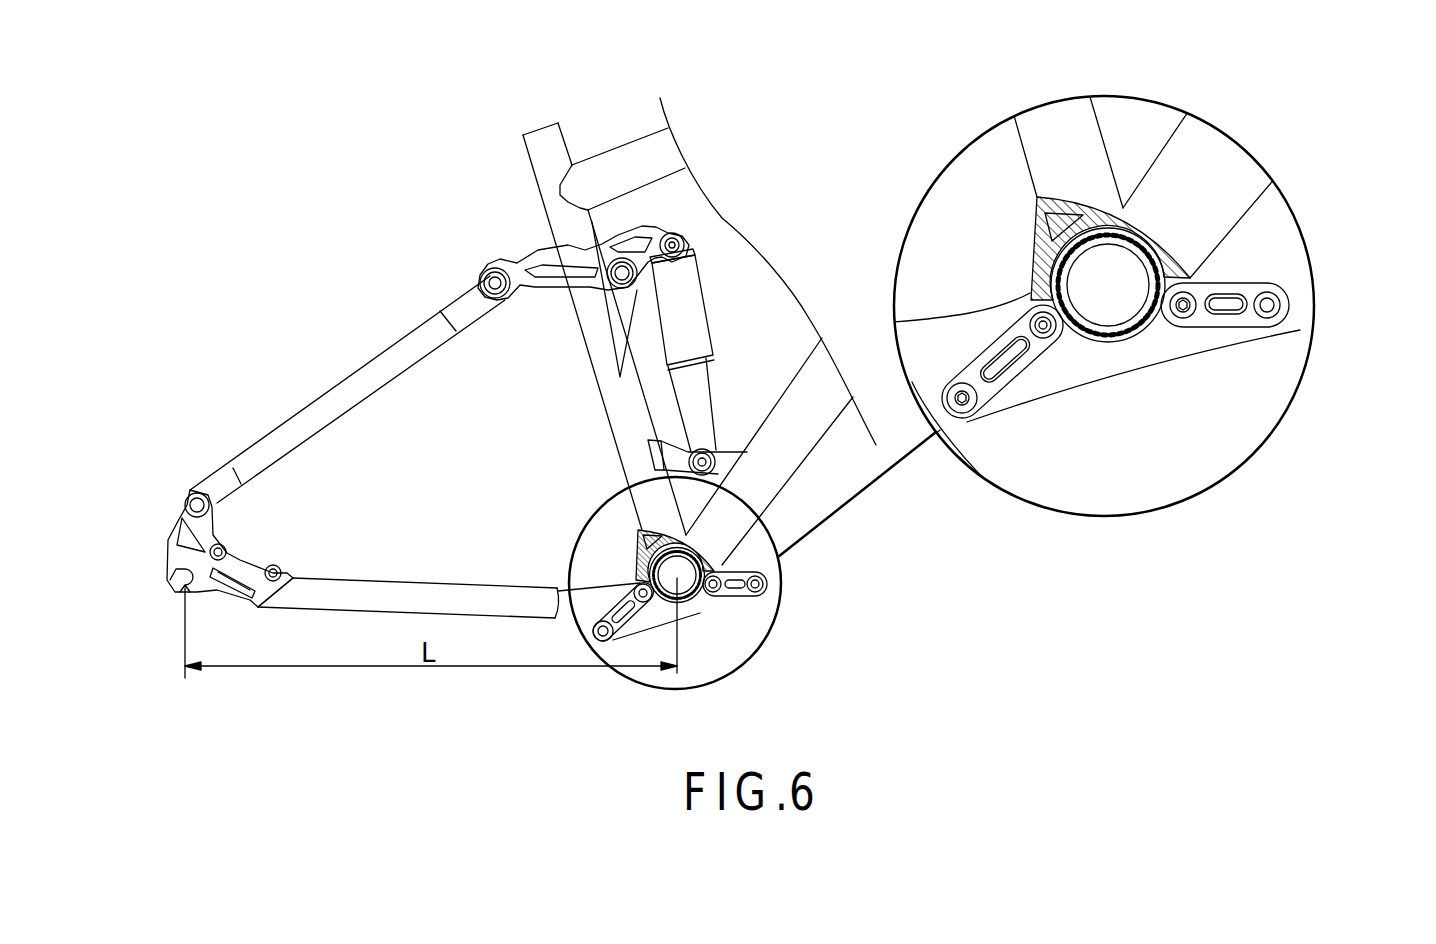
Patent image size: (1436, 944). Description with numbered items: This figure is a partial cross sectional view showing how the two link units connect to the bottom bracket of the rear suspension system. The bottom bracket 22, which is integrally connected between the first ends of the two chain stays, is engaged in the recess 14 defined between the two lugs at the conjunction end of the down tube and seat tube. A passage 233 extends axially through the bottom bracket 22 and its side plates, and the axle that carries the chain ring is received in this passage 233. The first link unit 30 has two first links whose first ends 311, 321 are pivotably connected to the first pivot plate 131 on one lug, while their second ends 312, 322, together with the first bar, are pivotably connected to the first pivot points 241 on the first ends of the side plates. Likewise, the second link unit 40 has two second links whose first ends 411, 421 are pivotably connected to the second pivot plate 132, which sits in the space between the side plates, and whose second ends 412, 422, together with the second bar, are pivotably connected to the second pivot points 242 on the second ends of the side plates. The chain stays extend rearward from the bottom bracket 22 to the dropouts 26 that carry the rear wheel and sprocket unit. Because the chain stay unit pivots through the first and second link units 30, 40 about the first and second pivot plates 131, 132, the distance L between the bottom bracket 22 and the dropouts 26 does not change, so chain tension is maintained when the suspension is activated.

The recess 14 is at (1155, 213).
The bottom bracket 22 is at (1193, 278).
The dropouts 26 is at (177, 522).
The first link unit 30 is at (760, 598).
The second link unit 40 is at (610, 594).
The passage 233 is at (1109, 287).
The first end of first link 311 is at (1200, 428).
The first end of first link 321 is at (1200, 428).
The first pivot plate 131 is at (1183, 309).
The second end of first link 312 is at (1338, 399).
The second end of first link 322 is at (1338, 399).
The first pivot points 241 is at (1267, 311).
The first end of second link 411 is at (923, 219).
The first end of second link 421 is at (923, 219).
The second pivot plate 132 is at (1031, 298).
The second end of second link 412 is at (974, 453).
The second end of second link 422 is at (974, 453).
The second pivot points 242 is at (962, 404).